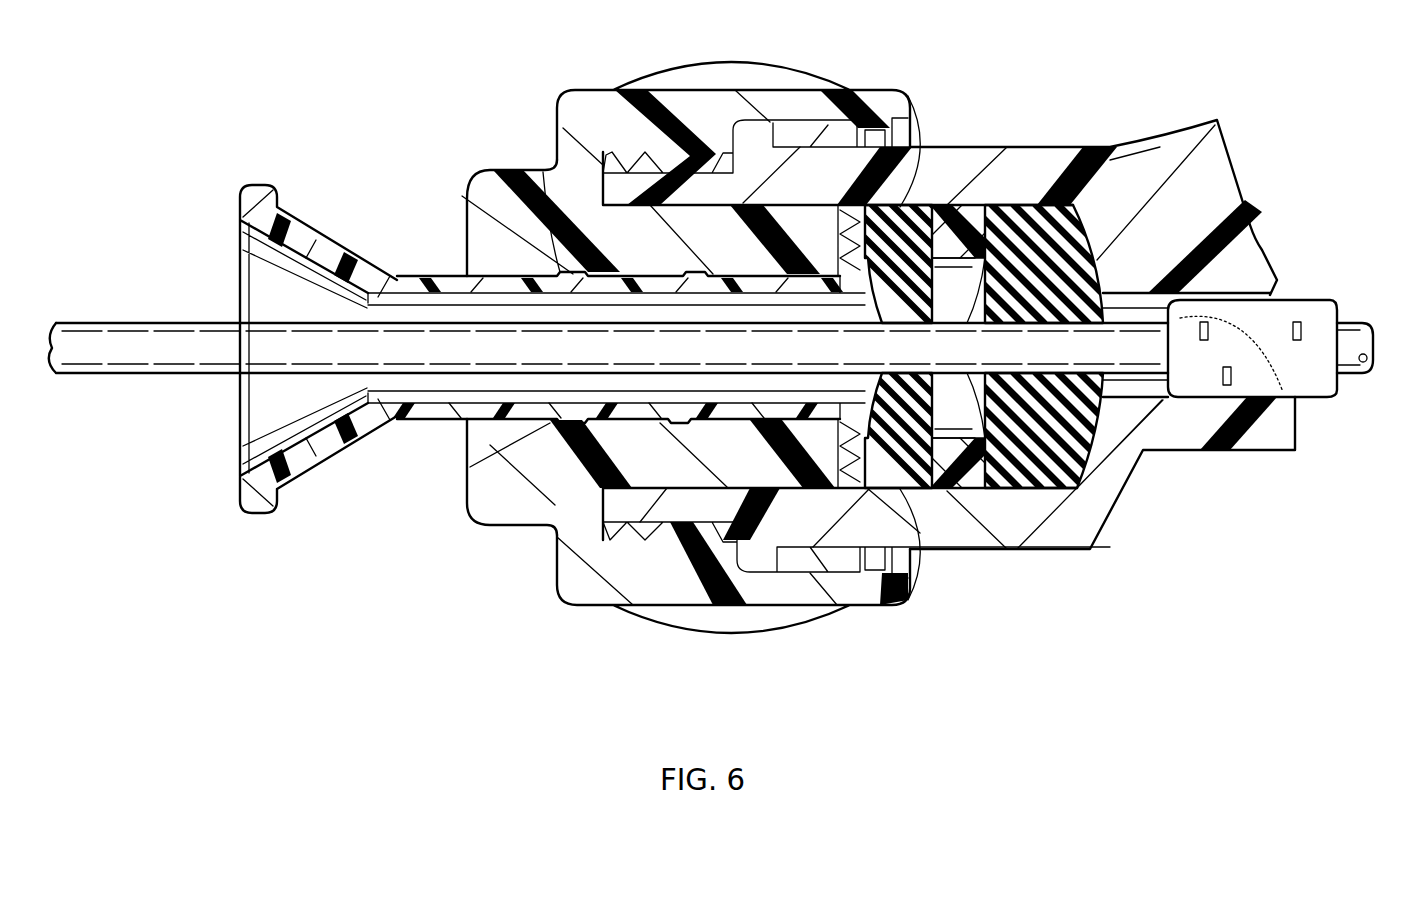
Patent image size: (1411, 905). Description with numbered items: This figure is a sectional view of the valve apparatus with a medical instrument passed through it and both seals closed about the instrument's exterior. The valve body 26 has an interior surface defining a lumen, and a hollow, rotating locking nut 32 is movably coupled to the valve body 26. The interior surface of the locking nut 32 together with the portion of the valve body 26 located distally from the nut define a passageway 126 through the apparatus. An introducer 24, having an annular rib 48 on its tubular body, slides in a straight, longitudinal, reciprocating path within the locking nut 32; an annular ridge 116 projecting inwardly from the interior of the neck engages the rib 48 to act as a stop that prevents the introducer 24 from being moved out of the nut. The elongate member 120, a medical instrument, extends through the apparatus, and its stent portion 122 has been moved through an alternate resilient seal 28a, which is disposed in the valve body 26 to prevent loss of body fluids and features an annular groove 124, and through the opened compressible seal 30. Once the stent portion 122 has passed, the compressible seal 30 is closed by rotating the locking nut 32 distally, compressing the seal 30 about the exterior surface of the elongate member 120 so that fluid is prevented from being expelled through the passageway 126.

The introducer 24 is at (223, 180).
The valve body 26 is at (1128, 119).
The resilient seal 28a is at (921, 207).
The compressible seal 30 is at (997, 207).
The locking nut 32 is at (556, 86).
The second annular rib 48 is at (550, 170).
The annular ridge 116 is at (560, 274).
The elongate member 120 is at (205, 356).
The stent portion 122 is at (1292, 372).
The annular groove 124 is at (900, 207).
The passageway 126 is at (966, 394).